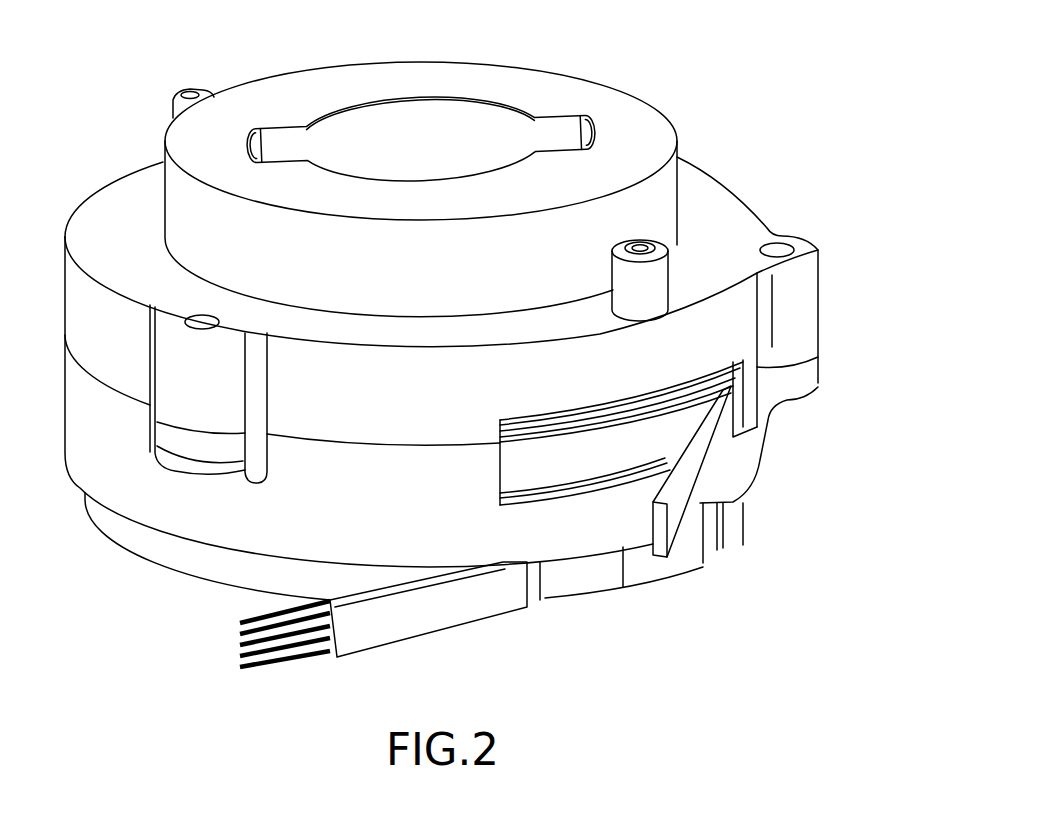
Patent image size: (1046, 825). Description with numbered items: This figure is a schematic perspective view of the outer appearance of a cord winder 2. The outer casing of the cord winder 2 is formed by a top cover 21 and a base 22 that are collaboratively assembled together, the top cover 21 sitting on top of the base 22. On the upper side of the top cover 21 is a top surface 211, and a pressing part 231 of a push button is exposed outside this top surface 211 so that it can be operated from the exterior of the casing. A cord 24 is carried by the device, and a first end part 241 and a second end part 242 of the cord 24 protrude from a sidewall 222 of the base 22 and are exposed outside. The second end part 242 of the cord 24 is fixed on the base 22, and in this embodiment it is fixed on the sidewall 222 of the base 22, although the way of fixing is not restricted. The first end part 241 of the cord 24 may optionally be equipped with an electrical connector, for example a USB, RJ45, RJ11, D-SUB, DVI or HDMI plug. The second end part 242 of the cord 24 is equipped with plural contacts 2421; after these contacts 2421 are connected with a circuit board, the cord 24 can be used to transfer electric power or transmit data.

The cord winder 2 is at (725, 31).
The top cover 21 is at (720, 200).
The top surface 211 is at (532, 83).
The pressing part 231 is at (357, 123).
The base 22 is at (175, 571).
The sidewall 222 is at (757, 467).
The cord 24 is at (578, 468).
The first end part 241 is at (682, 508).
The second end part 242 is at (380, 623).
The contacts 2421 is at (277, 653).